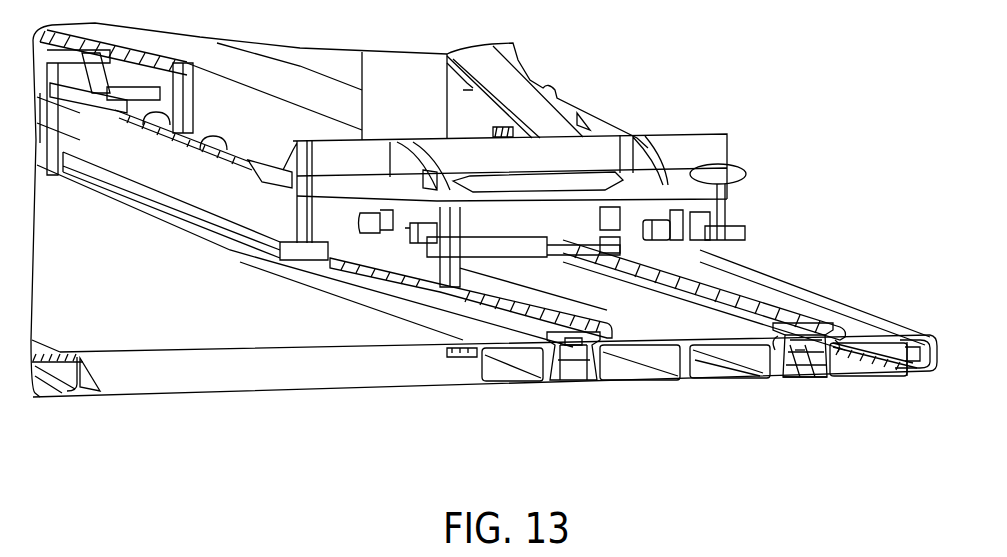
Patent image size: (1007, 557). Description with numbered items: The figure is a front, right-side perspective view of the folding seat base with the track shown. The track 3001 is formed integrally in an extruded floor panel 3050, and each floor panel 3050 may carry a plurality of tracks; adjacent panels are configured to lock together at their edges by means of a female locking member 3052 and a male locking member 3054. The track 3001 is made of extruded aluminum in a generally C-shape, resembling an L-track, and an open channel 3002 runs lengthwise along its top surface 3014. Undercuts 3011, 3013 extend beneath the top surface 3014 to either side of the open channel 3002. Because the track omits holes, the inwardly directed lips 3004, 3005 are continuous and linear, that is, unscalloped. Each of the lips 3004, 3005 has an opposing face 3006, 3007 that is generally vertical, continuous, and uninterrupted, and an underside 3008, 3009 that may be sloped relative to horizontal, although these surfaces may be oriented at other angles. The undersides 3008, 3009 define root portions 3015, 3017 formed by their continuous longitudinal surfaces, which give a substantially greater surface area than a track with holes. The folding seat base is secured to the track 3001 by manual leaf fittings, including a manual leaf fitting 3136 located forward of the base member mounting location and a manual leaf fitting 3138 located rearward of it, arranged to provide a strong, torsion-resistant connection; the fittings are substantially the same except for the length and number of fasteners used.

The track 3001 is at (812, 328).
The open channel 3002 is at (795, 315).
The inwardly directed lip 3004 is at (775, 330).
The inwardly directed lip 3005 is at (822, 322).
The opposing face 3006 is at (800, 352).
The opposing face 3007 is at (802, 352).
The underside 3008 is at (553, 372).
The underside 3009 is at (597, 370).
The undercut 3011 is at (775, 355).
The undercut 3013 is at (838, 342).
The top surface 3014 is at (727, 305).
The root portion 3015 is at (797, 357).
The root portion 3017 is at (577, 360).
The extruded floor panel 3050 is at (877, 328).
The female locking member 3052 is at (488, 380).
The male locking member 3054 is at (922, 362).
The manual leaf fitting 3136 is at (432, 263).
The manual leaf fitting 3138 is at (720, 283).